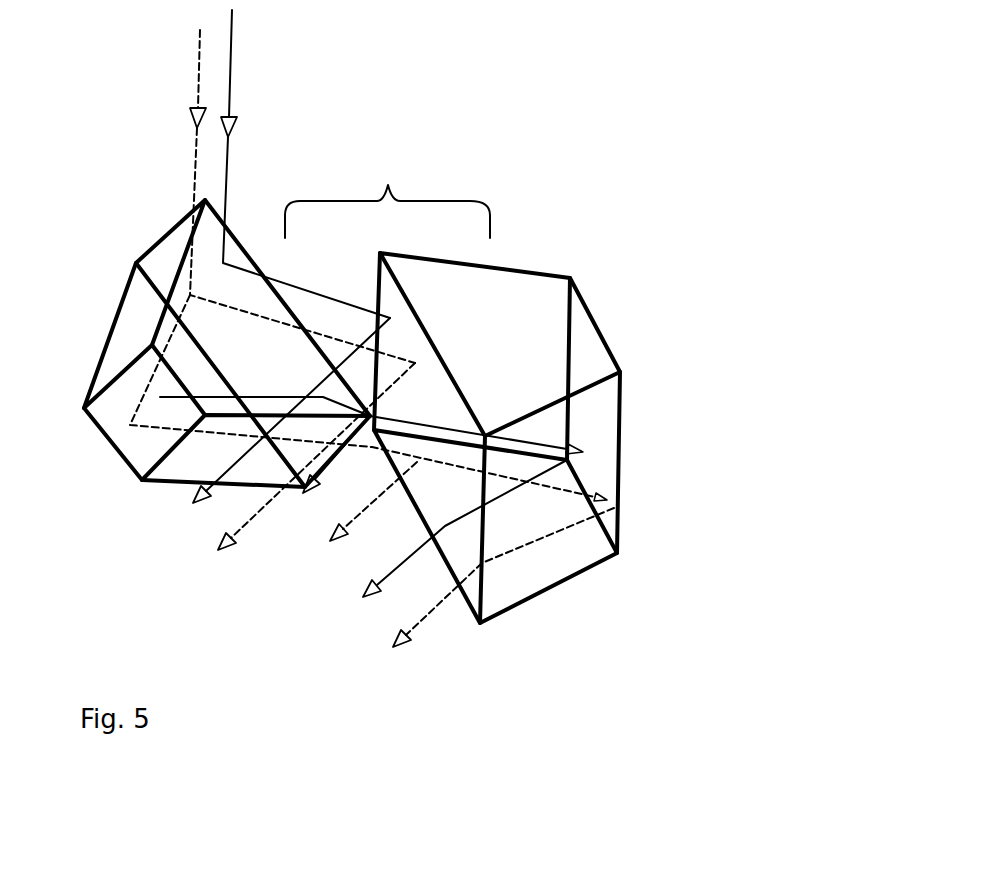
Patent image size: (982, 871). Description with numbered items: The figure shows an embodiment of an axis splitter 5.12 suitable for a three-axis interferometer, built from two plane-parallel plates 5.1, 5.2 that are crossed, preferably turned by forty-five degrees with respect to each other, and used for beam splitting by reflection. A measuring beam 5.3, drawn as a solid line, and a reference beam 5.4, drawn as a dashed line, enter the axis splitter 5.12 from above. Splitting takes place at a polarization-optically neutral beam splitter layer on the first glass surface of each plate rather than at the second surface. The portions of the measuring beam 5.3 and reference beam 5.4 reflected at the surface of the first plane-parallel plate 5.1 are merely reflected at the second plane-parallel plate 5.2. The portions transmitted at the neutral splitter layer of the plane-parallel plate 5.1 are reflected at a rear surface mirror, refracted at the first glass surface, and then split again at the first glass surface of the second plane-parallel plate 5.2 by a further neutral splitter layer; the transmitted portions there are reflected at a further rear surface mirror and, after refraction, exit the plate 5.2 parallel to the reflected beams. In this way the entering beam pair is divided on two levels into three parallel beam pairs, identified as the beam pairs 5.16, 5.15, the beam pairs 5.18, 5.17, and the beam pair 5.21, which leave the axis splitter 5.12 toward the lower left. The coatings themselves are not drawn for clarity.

The plane-parallel plate 5.1 is at (124, 457).
The plane-parallel plate 5.2 is at (518, 300).
The measuring beam 5.3 is at (232, 58).
The reference beam 5.4 is at (197, 73).
The axis splitter 5.12 is at (387, 195).
The parallel beam pair 5.21 is at (202, 558).
The parallel beam pair 5.17 is at (292, 512).
The parallel beam pair 5.18 is at (318, 555).
The parallel beam pair 5.15 is at (350, 624).
The parallel beam pair 5.16 is at (375, 656).